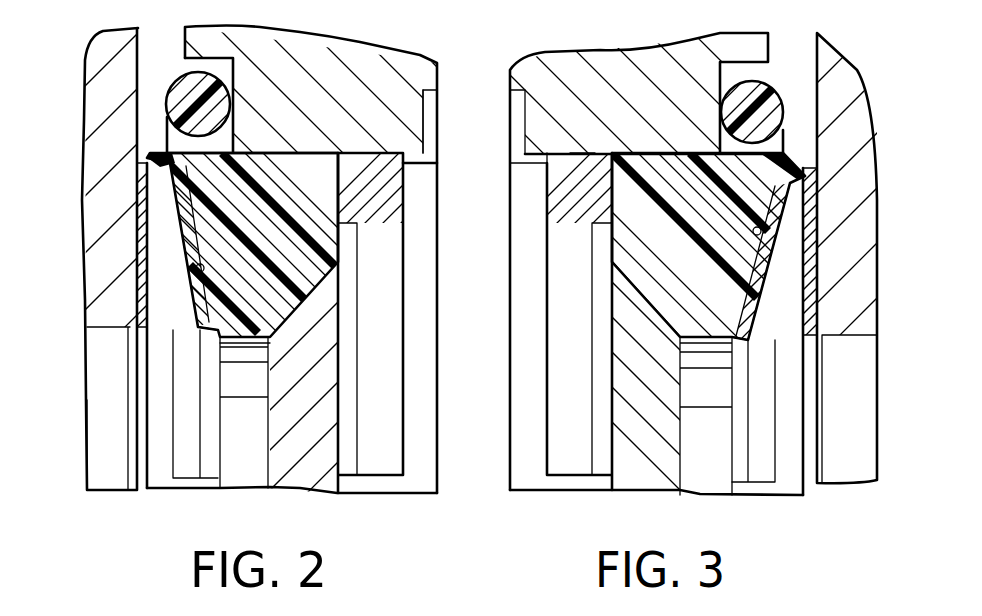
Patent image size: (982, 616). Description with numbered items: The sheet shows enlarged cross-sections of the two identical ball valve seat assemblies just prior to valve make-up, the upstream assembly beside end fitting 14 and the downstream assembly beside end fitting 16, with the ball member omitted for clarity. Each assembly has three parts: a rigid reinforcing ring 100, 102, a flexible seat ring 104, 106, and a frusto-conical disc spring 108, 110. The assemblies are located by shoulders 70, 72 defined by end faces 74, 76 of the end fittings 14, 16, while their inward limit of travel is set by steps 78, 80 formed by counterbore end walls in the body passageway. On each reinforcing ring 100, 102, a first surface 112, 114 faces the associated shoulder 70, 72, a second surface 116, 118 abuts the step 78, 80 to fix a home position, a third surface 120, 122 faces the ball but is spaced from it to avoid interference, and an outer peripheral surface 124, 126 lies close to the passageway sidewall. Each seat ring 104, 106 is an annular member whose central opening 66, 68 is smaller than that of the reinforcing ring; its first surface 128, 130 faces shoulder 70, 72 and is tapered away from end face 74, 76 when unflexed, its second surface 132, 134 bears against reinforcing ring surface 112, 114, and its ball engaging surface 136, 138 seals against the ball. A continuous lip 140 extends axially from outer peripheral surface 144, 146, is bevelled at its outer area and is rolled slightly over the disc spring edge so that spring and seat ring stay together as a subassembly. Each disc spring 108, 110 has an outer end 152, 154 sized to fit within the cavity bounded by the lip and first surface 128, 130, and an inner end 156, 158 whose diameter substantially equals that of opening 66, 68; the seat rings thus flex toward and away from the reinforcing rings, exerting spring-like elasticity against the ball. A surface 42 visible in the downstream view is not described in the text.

In FIG. 2, the end fitting 14 is at (102, 92).
In FIG. 3, the end fitting 16 is at (848, 82).
In FIG. 3, the seal tip 42 is at (797, 168).
In FIG. 2, the central opening 66 is at (250, 453).
In FIG. 3, the central opening 68 is at (703, 470).
In FIG. 2, the shoulder 70 is at (78, 309).
In FIG. 3, the shoulder 72 is at (884, 259).
In FIG. 2, the end face 74 is at (136, 276).
In FIG. 3, the end face 76 is at (816, 291).
In FIG. 2, the shoulder or step 78 is at (412, 158).
In FIG. 3, the shoulder or step 80 is at (513, 180).
In FIG. 2, the reinforcing ring 100 is at (387, 189).
In FIG. 3, the reinforcing ring 102 is at (600, 189).
In FIG. 2, the seat ring 104 is at (283, 234).
In FIG. 3, the seat ring 106 is at (680, 244).
In FIG. 2, the frusto-conical disc spring 108 is at (190, 238).
In FIG. 3, the frusto-conical disc spring 110 is at (758, 245).
In FIG. 2, the first surface 112 is at (335, 160).
In FIG. 3, the first surface 114 is at (632, 152).
In FIG. 2, the second surface 116 is at (424, 140).
In FIG. 3, the second surface 118 is at (538, 156).
In FIG. 2, the third surface 120 is at (395, 230).
In FIG. 3, the third surface 122 is at (562, 287).
In FIG. 2, the outer peripheral surface 124 is at (368, 152).
In FIG. 3, the outer peripheral surface 126 is at (582, 152).
In FIG. 2, the first surface 128 is at (204, 270).
In FIG. 3, the first surface 130 is at (753, 228).
In FIG. 2, the second surface 132 is at (348, 226).
In FIG. 3, the second surface 134 is at (591, 224).
In FIG. 2, the ball engaging surface 136 is at (305, 328).
In FIG. 3, the ball engaging surface 138 is at (623, 302).
In FIG. 2, the flange or lip 140 is at (157, 159).
In FIG. 2, the outer peripheral surface 144 is at (252, 151).
In FIG. 3, the outer peripheral surface 146 is at (668, 152).
In FIG. 2, the outer end 152 is at (178, 186).
In FIG. 3, the outer end 154 is at (780, 192).
In FIG. 2, the inner end 156 is at (207, 323).
In FIG. 3, the inner end 158 is at (747, 328).